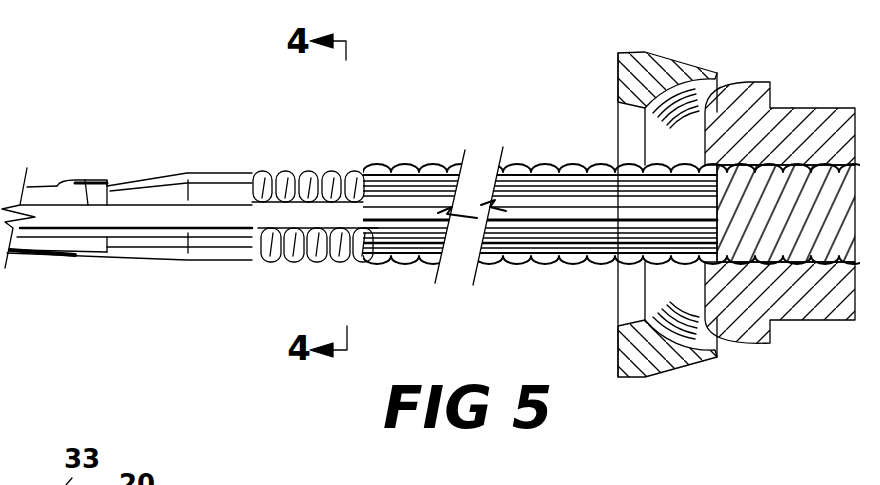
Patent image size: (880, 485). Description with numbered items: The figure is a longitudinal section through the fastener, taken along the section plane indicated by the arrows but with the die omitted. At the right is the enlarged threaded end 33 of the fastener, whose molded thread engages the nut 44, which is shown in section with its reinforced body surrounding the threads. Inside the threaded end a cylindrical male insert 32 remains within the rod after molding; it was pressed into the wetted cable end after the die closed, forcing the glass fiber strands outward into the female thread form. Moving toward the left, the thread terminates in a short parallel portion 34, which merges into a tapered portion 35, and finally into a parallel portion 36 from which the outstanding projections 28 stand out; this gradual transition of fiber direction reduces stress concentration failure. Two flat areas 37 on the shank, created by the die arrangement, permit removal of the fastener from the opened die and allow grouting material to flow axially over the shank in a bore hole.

The outstanding projections 28 is at (83, 181).
The male insert 32 is at (528, 212).
The enlarged threaded end 33 is at (422, 165).
The short parallel portion 34 is at (226, 166).
The tapered portion 35 is at (153, 176).
The parallel portion 36 is at (72, 255).
The flat areas 37 is at (163, 217).
The nut 44 is at (810, 322).